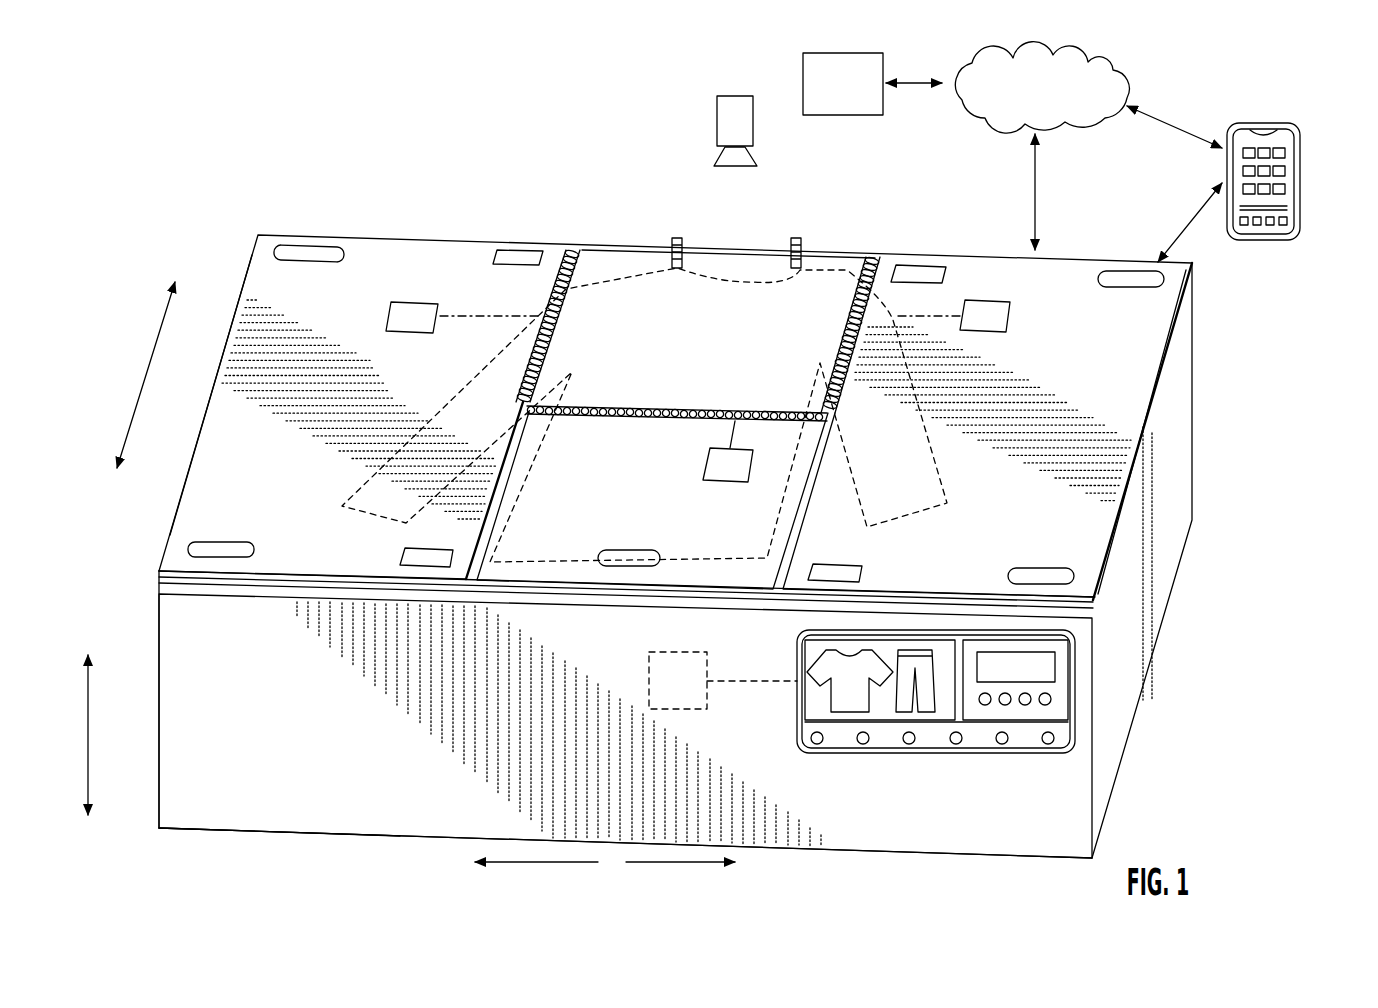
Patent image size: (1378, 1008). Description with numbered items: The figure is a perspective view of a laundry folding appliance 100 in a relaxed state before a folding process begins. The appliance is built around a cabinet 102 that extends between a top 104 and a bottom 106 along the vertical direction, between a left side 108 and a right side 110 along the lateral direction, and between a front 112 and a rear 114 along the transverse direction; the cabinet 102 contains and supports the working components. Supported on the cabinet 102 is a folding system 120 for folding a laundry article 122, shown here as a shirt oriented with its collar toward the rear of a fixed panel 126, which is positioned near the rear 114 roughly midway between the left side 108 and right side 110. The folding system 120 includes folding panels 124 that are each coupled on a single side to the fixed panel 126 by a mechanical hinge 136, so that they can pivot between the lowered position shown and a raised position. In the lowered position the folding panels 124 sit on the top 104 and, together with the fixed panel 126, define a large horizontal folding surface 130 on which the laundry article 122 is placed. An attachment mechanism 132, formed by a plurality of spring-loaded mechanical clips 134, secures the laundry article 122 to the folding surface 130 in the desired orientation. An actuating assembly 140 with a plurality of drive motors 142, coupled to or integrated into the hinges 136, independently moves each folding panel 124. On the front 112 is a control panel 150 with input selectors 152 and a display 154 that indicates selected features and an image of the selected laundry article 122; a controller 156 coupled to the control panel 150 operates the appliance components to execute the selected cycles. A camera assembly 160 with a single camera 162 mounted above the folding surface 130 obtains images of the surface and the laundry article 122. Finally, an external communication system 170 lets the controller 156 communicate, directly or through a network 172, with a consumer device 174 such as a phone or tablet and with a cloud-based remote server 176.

The laundry folding appliance 100 is at (228, 136).
The cabinet 102 is at (211, 815).
The top 104 is at (155, 577).
The bottom 106 is at (155, 838).
The left side 108 is at (157, 658).
The right side 110 is at (1185, 492).
The front 112 is at (350, 818).
The rear 114 is at (1197, 389).
The folding system 120 is at (546, 236).
The laundry article 122 is at (850, 280).
The folding panel 124 is at (300, 307).
The fixed panel 126 is at (823, 265).
The folding surface 130 is at (240, 352).
The attachment mechanism 132 is at (667, 221).
The spring-loaded mechanical clip 134 is at (679, 237).
The mechanical hinge 136 is at (569, 246).
The actuating assembly 140 is at (385, 320).
The drive motor 142 is at (412, 301).
The control panel 150 is at (993, 677).
The input selector 152 is at (1058, 700).
The display 154 is at (941, 648).
The controller 156 is at (707, 709).
The camera assembly 160 is at (722, 103).
The camera 162 is at (716, 108).
The external communication system 170 is at (1081, 144).
The network 172 is at (1021, 100).
The consumer device 174 is at (1302, 152).
The remote server 176 is at (828, 98).